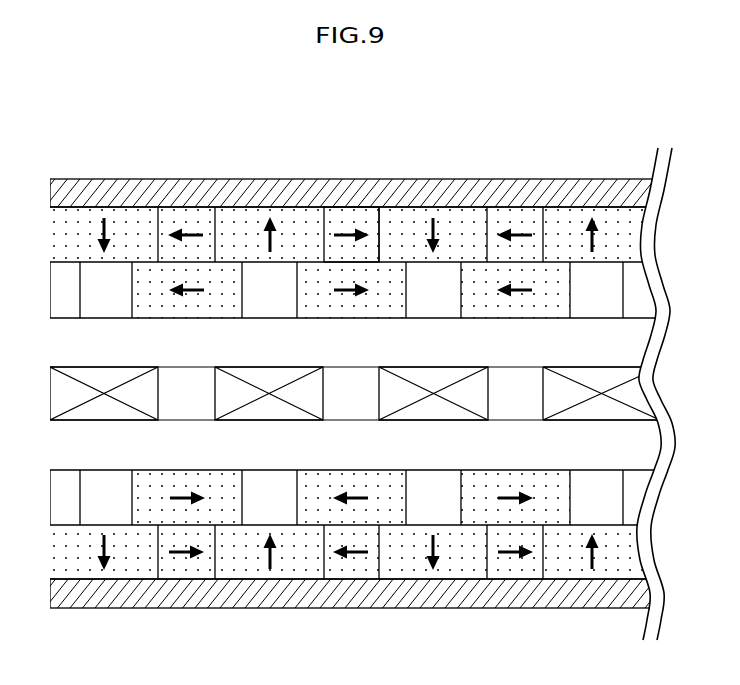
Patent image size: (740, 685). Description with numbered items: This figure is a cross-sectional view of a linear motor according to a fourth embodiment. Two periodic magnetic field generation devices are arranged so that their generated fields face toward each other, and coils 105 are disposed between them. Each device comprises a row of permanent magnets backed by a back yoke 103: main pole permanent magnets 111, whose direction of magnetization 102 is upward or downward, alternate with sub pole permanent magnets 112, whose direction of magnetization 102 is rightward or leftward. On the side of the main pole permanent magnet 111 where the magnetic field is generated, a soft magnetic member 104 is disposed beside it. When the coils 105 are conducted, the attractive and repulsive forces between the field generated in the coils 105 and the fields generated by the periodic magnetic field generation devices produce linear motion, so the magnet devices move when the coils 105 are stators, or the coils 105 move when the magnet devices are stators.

The direction of magnetization 102 is at (270, 545).
The back yoke 103 is at (449, 593).
The soft magnetic member 104 is at (600, 283).
The coils 105 is at (267, 392).
The main pole permanent magnet 111 is at (130, 235).
The sub pole permanent magnet 112 is at (348, 222).